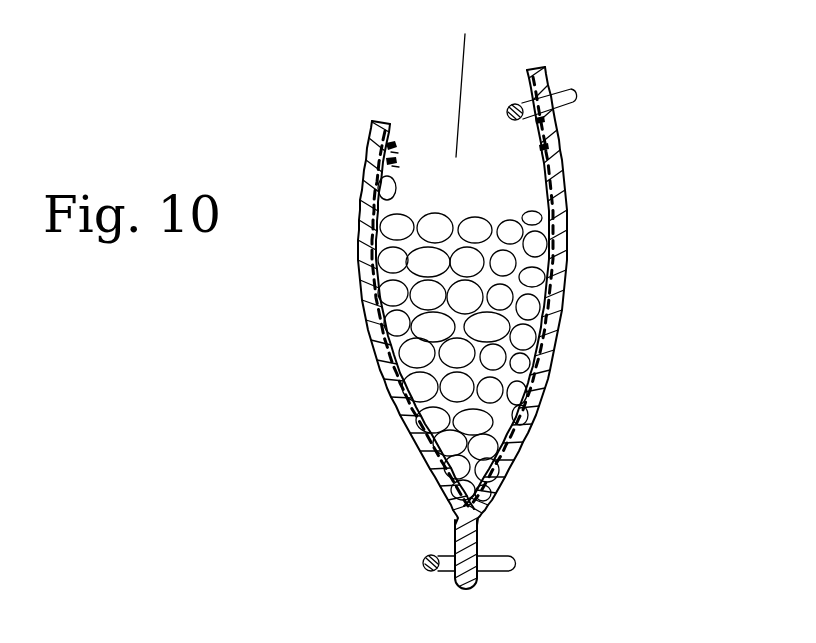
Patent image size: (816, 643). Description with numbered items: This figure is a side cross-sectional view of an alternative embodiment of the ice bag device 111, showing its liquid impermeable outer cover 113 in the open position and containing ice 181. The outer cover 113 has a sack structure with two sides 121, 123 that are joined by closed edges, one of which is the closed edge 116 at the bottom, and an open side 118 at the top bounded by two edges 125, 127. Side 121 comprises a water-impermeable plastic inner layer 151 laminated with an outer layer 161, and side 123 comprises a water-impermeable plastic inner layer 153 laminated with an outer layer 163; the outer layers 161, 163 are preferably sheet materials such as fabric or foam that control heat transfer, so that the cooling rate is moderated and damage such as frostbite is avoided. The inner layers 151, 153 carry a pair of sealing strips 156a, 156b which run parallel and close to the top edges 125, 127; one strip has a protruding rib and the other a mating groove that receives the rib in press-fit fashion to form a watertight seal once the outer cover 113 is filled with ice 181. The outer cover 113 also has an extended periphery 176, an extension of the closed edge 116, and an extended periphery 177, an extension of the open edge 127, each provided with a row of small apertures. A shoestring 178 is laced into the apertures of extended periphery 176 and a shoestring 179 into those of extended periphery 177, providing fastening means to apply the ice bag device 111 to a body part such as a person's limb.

The ice bag device 111 is at (330, 327).
The outer cover 113 is at (382, 388).
The closed edge 116 is at (490, 525).
The open side 118 is at (466, 79).
The side 121 is at (363, 236).
The side 123 is at (564, 200).
The edge 125 is at (385, 122).
The open edge 127 is at (560, 131).
The inner layer 151 is at (363, 207).
The inner layer 153 is at (562, 165).
The sealing strip 156a is at (390, 150).
The sealing strip 156b is at (537, 147).
The outer layer 161 is at (366, 268).
The outer layer 163 is at (557, 232).
The extended periphery 176 is at (479, 547).
The extended periphery 177 is at (547, 73).
The shoestring 178 is at (436, 555).
The shoestring 179 is at (573, 93).
The ice 181 is at (512, 263).